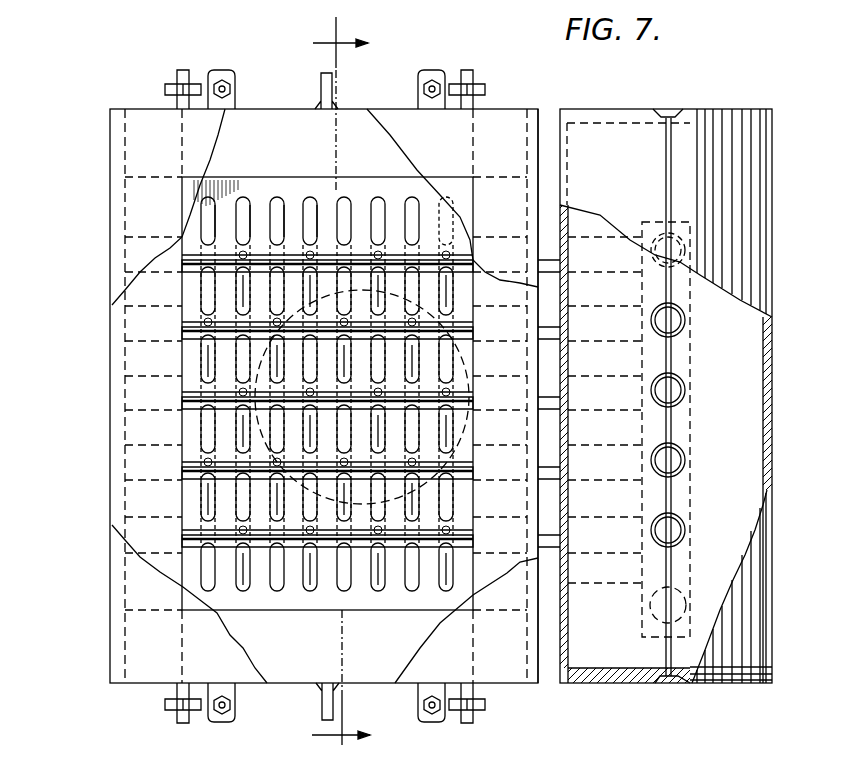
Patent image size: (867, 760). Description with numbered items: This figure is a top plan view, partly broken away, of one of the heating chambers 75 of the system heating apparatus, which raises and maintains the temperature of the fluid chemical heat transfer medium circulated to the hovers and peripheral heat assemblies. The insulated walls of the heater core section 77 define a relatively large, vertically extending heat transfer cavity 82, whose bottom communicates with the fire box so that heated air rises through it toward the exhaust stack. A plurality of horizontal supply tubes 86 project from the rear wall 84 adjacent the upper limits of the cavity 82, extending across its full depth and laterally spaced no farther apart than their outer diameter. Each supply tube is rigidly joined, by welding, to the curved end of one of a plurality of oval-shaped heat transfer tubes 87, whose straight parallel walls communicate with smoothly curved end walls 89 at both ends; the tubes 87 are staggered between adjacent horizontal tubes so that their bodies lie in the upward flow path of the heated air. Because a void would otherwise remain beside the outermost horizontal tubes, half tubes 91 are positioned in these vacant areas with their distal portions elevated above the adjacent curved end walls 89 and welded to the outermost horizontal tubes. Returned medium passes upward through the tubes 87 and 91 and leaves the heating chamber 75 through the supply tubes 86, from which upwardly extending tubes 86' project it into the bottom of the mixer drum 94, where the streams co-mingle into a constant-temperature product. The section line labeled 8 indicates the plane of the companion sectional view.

The heating chamber 75 is at (100, 210).
The heater core section 77 is at (238, 178).
The heat transfer cavity 82 is at (327, 210).
The rear wall 84 is at (539, 134).
The supply tubes 86 is at (383, 356).
The upwardly extending tubes 86' is at (689, 396).
The heat transfer tubes 87 is at (303, 198).
The curved end walls 89 is at (380, 215).
The half tubes 91 is at (346, 215).
The mixer drum 94 is at (745, 216).
The section line 8- 8 is at (348, 381).